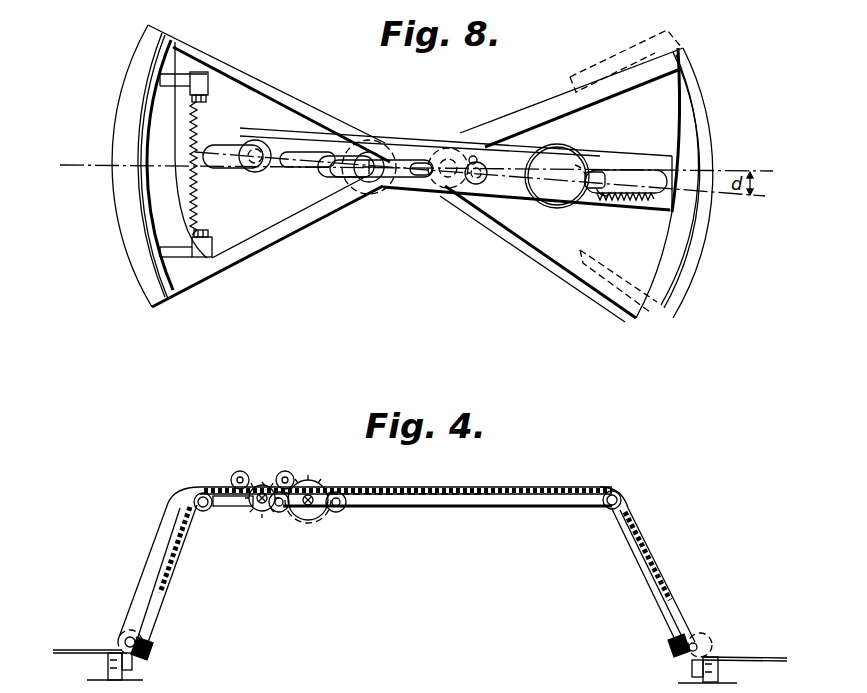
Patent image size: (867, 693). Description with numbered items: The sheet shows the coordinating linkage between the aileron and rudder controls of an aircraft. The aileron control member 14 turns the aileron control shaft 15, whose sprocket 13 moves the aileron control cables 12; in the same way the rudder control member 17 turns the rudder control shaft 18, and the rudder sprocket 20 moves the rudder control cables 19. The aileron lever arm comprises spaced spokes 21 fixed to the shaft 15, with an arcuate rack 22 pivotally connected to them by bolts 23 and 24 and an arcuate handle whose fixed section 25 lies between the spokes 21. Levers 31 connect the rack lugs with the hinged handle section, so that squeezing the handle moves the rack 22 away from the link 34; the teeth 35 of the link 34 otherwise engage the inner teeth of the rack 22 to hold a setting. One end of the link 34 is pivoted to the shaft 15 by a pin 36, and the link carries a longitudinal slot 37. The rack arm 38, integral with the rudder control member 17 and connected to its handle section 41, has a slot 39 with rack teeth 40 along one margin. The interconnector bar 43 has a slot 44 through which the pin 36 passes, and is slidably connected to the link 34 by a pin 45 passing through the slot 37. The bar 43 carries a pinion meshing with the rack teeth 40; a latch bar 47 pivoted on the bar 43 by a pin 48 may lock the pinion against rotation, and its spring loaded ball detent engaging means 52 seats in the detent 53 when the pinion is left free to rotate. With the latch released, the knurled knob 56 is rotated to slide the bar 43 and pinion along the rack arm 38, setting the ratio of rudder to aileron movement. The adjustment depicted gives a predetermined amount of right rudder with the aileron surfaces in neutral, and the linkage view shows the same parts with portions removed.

In FIG. 4, the aileron control cables 12 is at (78, 650).
In FIG. 4, the sprocket 13 is at (260, 518).
In FIG. 8, the aileron control member 14 is at (126, 63).
In FIG. 8, the aileron control shaft 15 is at (382, 140).
In FIG. 4, the aileron control shaft 15 is at (263, 483).
In FIG. 8, the rudder control member 17 is at (713, 92).
In FIG. 8, the rudder control shaft 18 is at (452, 146).
In FIG. 4, the rudder control shaft 18 is at (317, 488).
In FIG. 4, the rudder control cables 19 is at (157, 613).
In FIG. 4, the rudder sprocket 20 is at (308, 480).
In FIG. 8, the spokes 21 is at (262, 92).
In FIG. 8, the arcuate rack 22 is at (202, 122).
In FIG. 8, the bolt 23 is at (202, 80).
In FIG. 8, the bolt 24 is at (210, 238).
In FIG. 8, the handle section 25 is at (130, 118).
In FIG. 8, the levers 31 is at (173, 77).
In FIG. 8, the link 34 is at (238, 173).
In FIG. 8, the teeth 35 is at (205, 178).
In FIG. 8, the pin 36 is at (367, 183).
In FIG. 8, the slot 37 is at (218, 152).
In FIG. 8, the rack arm 38 is at (613, 208).
In FIG. 8, the slot 39 is at (635, 160).
In FIG. 8, the rack teeth 40 is at (638, 205).
In FIG. 8, the handle section 41 is at (700, 138).
In FIG. 8, the interconnector bar 43 is at (412, 185).
In FIG. 8, the slot 44 is at (318, 152).
In FIG. 8, the pin 45 is at (262, 150).
In FIG. 8, the latch bar 47 is at (468, 198).
In FIG. 8, the pin 48 is at (600, 165).
In FIG. 8, the ball detent engaging means 52 is at (454, 184).
In FIG. 8, the detent 53 is at (474, 156).
In FIG. 8, the knurled knob 56 is at (556, 155).